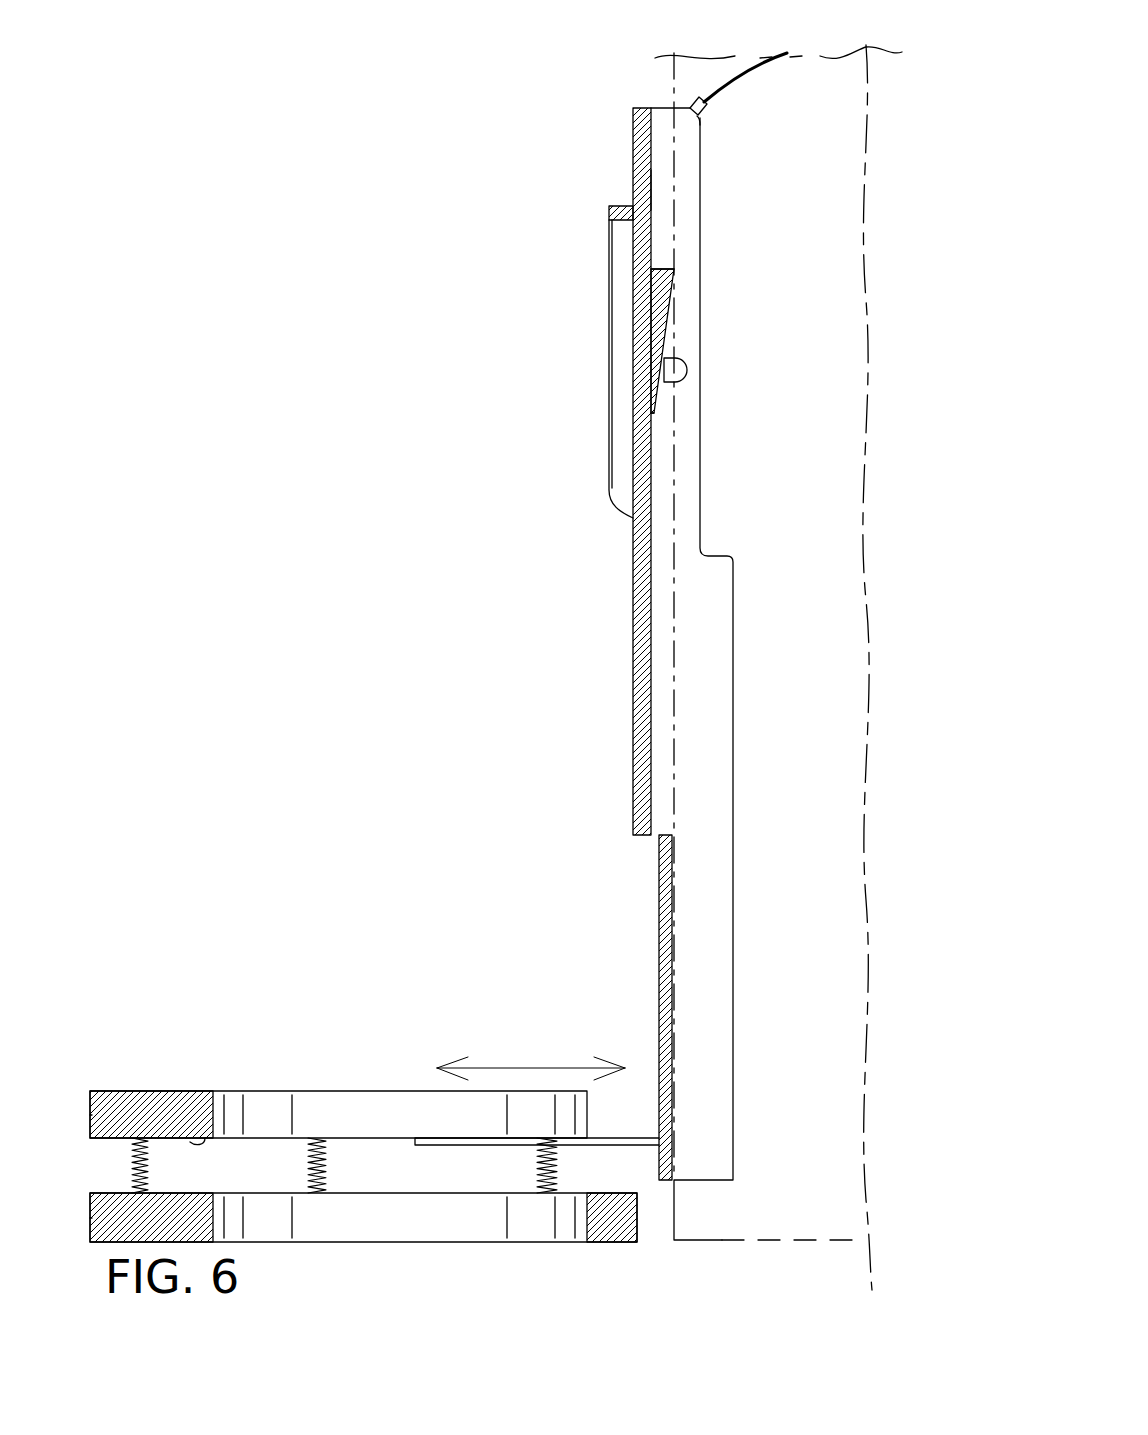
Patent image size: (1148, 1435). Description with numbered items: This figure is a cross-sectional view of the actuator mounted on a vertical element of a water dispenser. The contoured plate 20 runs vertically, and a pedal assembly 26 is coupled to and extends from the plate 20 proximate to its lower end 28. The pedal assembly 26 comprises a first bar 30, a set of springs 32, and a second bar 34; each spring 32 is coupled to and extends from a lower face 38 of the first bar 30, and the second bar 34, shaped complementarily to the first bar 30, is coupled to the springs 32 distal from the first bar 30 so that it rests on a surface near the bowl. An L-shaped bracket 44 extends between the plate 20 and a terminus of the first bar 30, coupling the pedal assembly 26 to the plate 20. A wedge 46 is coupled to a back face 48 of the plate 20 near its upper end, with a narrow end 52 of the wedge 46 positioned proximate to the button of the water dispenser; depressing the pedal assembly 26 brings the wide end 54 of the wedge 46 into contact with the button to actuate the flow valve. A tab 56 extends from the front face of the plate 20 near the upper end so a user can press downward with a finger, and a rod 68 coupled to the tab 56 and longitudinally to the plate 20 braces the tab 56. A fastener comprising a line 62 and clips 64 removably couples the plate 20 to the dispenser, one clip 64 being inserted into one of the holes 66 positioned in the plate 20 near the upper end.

The plate 20 is at (633, 665).
The pedal assembly 26 is at (90, 1218).
The lower end 28 is at (717, 1182).
The first bar 30 is at (275, 1110).
The set of springs 32 is at (546, 1150).
The second bar 34 is at (421, 1208).
The lower face 38 is at (205, 1138).
The brackets 44 is at (643, 1137).
The wedge 46 is at (660, 300).
The back face 48 is at (651, 190).
The narrow end 52 is at (652, 413).
The wide end 54 is at (658, 265).
The tab 56 is at (609, 209).
The line 62 is at (704, 97).
The clips 64 is at (697, 103).
The holes 66 is at (690, 112).
The rod 68 is at (620, 290).